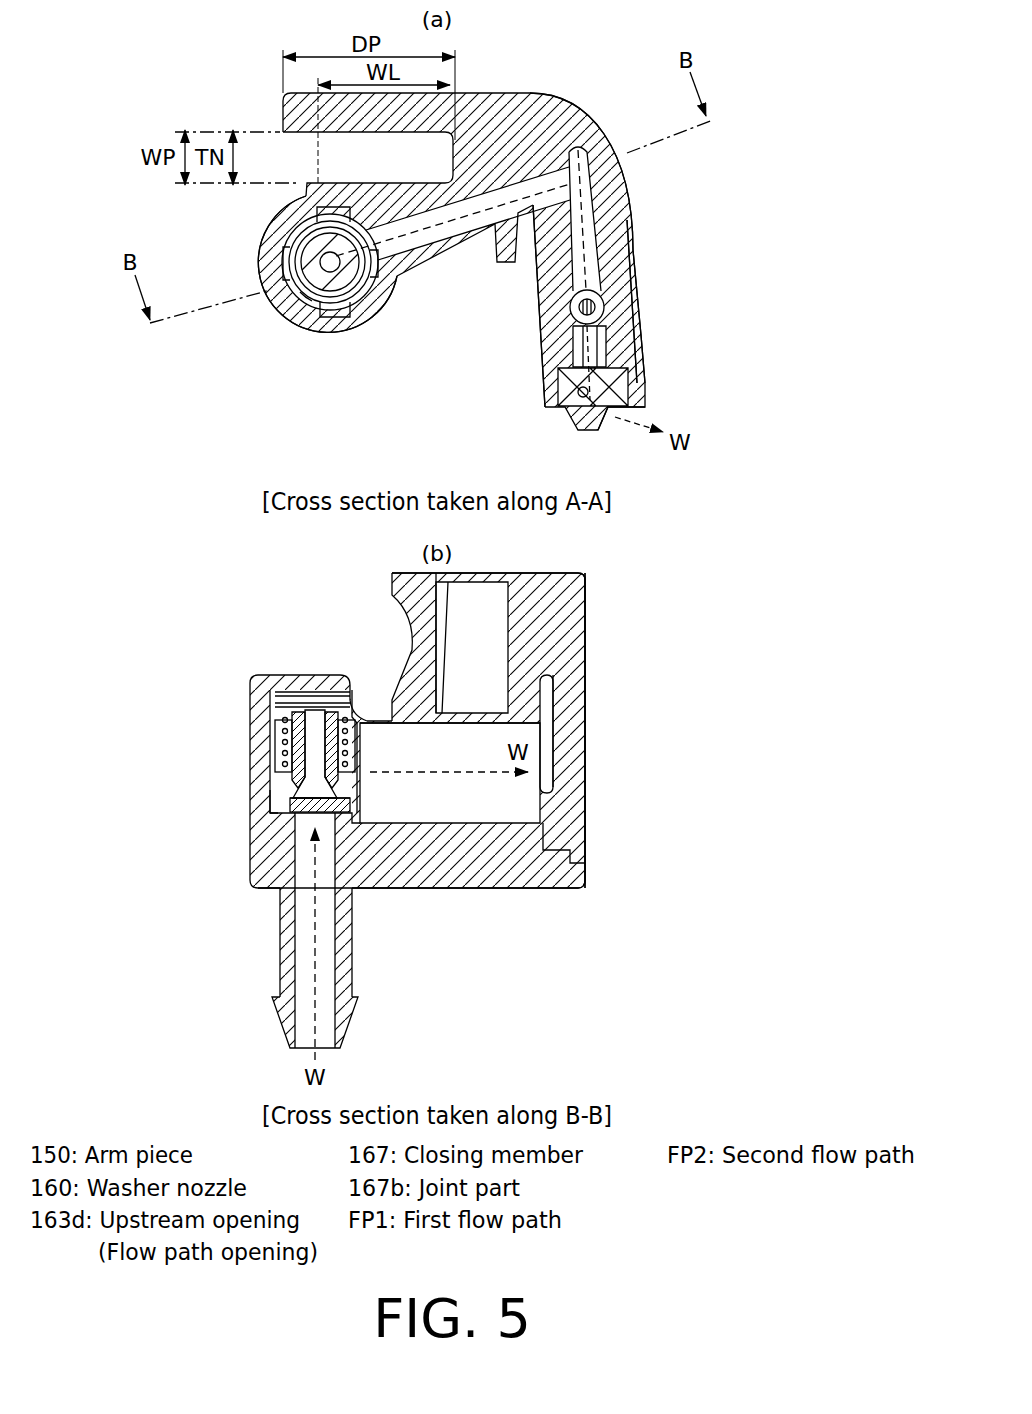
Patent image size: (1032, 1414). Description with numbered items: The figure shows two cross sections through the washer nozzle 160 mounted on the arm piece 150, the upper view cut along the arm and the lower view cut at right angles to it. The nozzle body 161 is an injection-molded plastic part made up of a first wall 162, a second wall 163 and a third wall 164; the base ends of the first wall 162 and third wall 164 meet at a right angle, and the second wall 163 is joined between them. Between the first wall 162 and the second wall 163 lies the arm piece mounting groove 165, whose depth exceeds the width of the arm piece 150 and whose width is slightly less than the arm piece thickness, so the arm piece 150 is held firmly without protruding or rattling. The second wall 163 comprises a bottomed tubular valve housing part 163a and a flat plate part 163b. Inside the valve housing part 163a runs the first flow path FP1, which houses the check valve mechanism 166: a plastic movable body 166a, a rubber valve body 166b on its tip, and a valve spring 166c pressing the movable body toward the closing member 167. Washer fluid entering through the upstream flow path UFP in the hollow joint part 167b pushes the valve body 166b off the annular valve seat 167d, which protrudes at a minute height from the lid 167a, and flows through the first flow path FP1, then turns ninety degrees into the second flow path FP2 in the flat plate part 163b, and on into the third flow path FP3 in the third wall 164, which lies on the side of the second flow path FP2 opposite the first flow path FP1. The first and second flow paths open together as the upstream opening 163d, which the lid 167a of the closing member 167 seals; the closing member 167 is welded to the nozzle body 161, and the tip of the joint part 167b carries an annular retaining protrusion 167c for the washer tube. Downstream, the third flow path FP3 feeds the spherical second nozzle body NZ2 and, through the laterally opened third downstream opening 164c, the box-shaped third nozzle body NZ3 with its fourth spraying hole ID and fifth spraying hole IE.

The arm piece 150 is at (486, 165).
The washer nozzle 160 is at (433, 382).
The nozzle body 161 is at (560, 100).
The first wall 162 is at (393, 126).
The second wall 163 is at (432, 267).
The valve housing part 163a is at (305, 320).
The flat plate part 163b is at (462, 252).
The upstream opening 163d is at (543, 848).
The third wall 164 is at (618, 292).
The third downstream opening 164c is at (595, 340).
The arm piece mounting groove 165 is at (383, 183).
The check valve mechanism 166 is at (290, 230).
The movable body 166a is at (300, 292).
The valve body 166b is at (347, 795).
The valve spring 166c is at (303, 258).
The closing member 167 is at (250, 889).
The lid 167a is at (468, 870).
The joint part 167b is at (287, 952).
The retaining protrusion 167c is at (282, 1010).
The valve seat 167d is at (278, 815).
The first flow path FP1 is at (333, 312).
The second flow path FP2 is at (513, 228).
The third flow path FP3 is at (604, 250).
The upstream flow path UFP is at (325, 960).
The second nozzle body NZ2 is at (570, 315).
The third nozzle body NZ3 is at (580, 410).
The fifth spraying hole IE is at (585, 383).
The fourth spraying hole ID is at (620, 405).